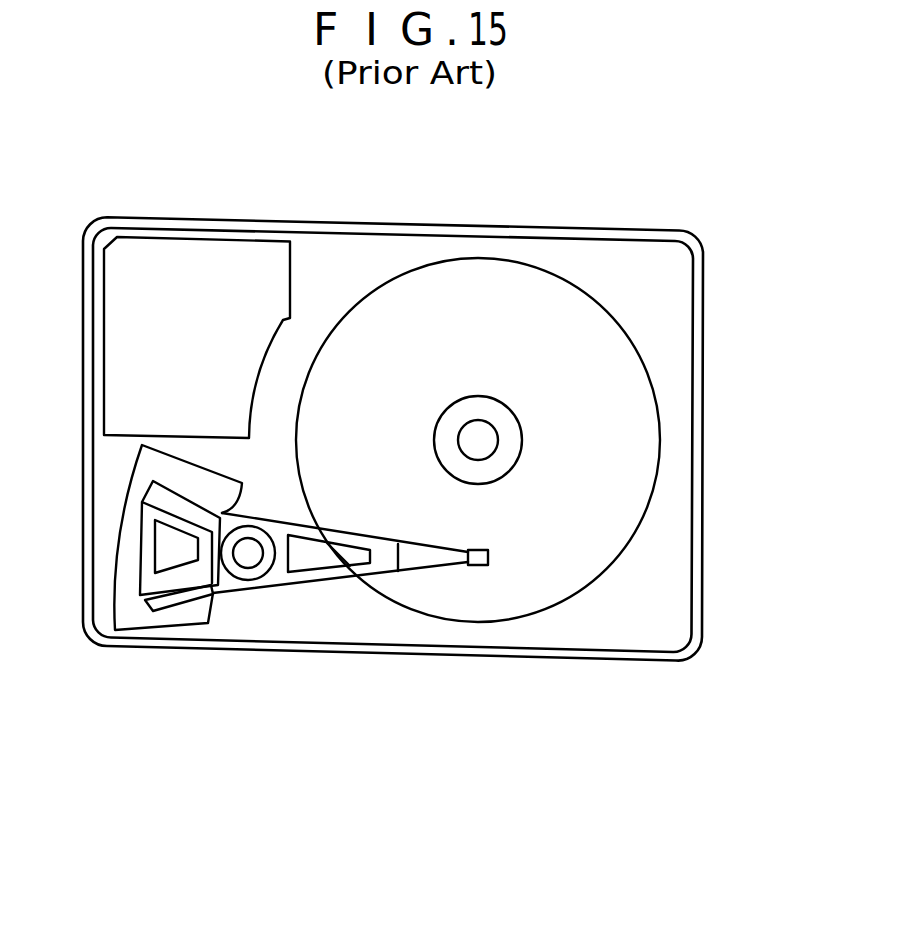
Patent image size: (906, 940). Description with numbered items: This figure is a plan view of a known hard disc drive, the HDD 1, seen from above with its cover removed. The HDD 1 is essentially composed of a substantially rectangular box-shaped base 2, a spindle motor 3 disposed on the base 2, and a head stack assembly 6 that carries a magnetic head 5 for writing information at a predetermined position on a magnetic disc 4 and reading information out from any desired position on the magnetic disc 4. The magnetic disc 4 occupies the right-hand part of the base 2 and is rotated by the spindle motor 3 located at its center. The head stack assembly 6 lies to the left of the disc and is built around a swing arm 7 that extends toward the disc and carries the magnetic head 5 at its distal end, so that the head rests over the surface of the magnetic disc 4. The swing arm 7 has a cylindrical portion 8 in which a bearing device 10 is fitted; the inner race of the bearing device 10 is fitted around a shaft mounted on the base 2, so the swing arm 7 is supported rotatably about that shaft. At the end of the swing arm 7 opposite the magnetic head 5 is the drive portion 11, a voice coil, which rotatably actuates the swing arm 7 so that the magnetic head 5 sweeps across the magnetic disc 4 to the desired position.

The hard disc drive 1 is at (595, 199).
The base 2 is at (665, 548).
The spindle motor 3 is at (510, 442).
The magnetic disc 4 is at (573, 565).
The magnetic head 5 is at (480, 565).
The head stack assembly 6 is at (294, 631).
The swing arm 7 is at (278, 578).
The cylindrical portion 8 is at (248, 560).
The bearing device 10 is at (238, 572).
The drive portion 11 is at (170, 557).